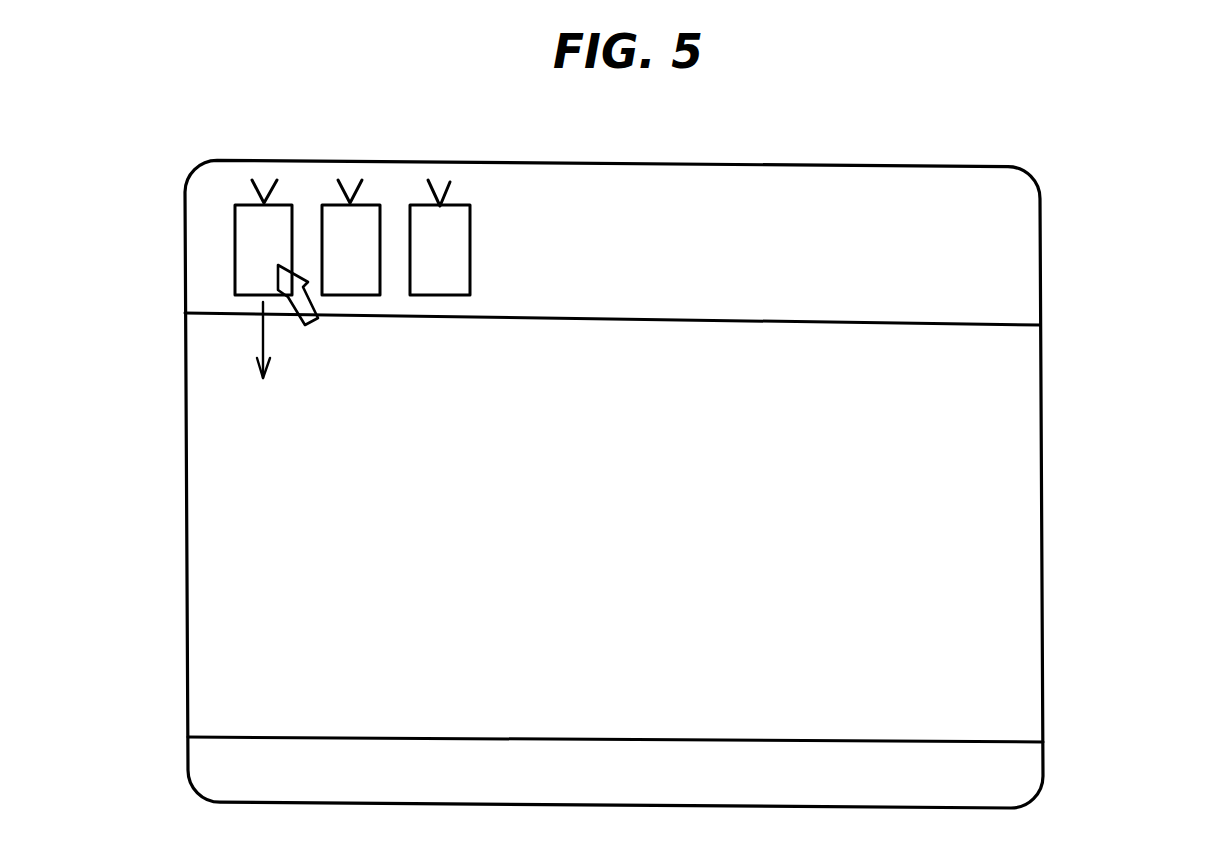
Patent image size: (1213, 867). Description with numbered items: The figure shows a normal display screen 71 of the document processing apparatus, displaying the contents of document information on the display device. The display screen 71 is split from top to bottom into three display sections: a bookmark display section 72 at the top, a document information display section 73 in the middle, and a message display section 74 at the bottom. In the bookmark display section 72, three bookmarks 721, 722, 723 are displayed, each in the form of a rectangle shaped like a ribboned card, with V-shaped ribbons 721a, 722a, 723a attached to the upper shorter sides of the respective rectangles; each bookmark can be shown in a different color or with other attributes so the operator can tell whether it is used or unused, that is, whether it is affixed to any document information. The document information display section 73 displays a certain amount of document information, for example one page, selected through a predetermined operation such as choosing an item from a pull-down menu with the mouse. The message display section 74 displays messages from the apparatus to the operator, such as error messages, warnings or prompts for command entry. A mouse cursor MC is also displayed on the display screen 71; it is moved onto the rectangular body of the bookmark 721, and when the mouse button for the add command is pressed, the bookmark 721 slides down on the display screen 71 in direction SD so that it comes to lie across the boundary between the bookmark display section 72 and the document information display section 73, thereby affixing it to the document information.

The display screen 71 is at (662, 162).
The bookmark display section 72 is at (1045, 248).
The document information display section 73 is at (1045, 463).
The message display section 74 is at (1045, 762).
The bookmark 721 is at (245, 252).
The bookmark 722 is at (363, 282).
The bookmark 723 is at (462, 270).
The V-shaped ribbon 721a is at (255, 192).
The V-shaped ribbon 722a is at (337, 193).
The V-shaped ribbon 723a is at (428, 187).
The direction SD is at (262, 330).
The mouse cursor MC is at (313, 318).